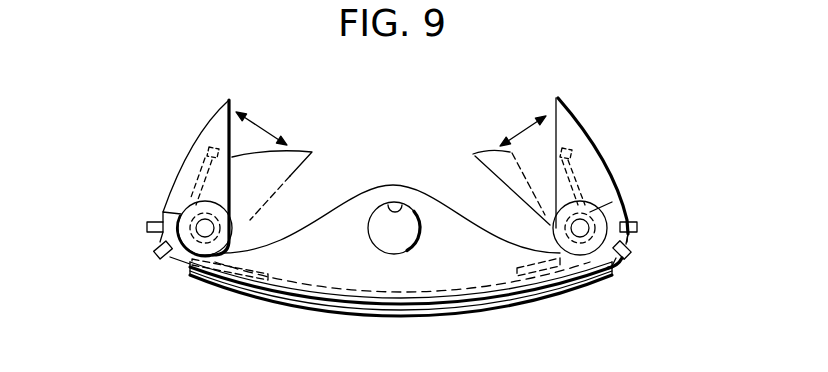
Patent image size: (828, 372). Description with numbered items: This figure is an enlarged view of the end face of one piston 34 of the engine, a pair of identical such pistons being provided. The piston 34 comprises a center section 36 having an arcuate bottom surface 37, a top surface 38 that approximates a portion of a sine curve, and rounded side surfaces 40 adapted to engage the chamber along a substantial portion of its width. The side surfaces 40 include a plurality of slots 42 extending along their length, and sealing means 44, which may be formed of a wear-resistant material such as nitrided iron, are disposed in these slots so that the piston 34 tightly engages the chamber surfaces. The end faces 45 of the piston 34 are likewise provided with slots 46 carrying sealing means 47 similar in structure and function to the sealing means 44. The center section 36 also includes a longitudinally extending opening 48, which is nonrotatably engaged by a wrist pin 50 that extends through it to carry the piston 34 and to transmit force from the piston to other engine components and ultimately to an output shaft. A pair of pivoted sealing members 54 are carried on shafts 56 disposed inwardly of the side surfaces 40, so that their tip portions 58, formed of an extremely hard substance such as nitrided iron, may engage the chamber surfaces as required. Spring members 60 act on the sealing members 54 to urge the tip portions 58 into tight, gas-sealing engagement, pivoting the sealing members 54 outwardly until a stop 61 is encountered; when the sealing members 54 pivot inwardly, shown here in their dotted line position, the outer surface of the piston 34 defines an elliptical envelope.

The piston 34 is at (252, 297).
The center section 36 is at (385, 273).
The arcuate bottom surface 37 is at (323, 316).
The top surface 38 is at (370, 290).
The rounded side surfaces 40 is at (155, 241).
The slots 42 is at (163, 208).
The sealing means 44 is at (147, 224).
The end faces 45 is at (336, 210).
The slots 46 is at (453, 306).
The sealing means 47 is at (493, 294).
The longitudinally extending opening 48 is at (387, 205).
The wrist pin 50 is at (407, 228).
The pivoted sealing members 54 is at (214, 118).
The shafts 56 is at (205, 228).
The tip portions 58 is at (226, 98).
The spring members 60 is at (207, 148).
The stop 61 is at (613, 201).